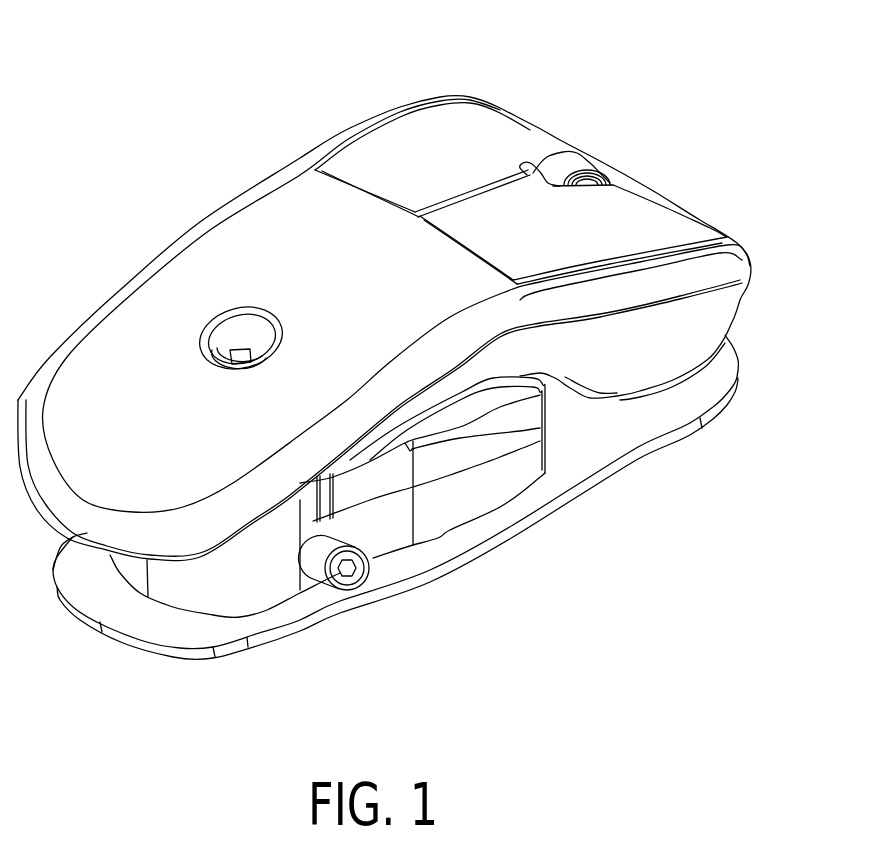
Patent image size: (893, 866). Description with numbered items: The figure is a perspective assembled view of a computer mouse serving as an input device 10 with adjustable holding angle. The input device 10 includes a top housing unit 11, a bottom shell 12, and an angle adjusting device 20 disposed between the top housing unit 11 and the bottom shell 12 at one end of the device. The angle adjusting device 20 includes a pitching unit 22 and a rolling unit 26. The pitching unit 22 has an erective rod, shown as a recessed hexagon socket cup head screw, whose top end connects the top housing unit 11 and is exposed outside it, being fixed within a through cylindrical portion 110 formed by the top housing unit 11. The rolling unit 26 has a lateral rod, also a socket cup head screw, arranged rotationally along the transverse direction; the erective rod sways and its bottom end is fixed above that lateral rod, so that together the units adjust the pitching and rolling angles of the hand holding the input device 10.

The input device 10 is at (699, 53).
The top housing unit 11 is at (297, 213).
The cylindrical portion 110 is at (243, 328).
The pitching unit 22 is at (217, 338).
The angle adjusting device 20 is at (565, 445).
The bottom shell 12 is at (513, 525).
The rolling unit 26 is at (318, 587).